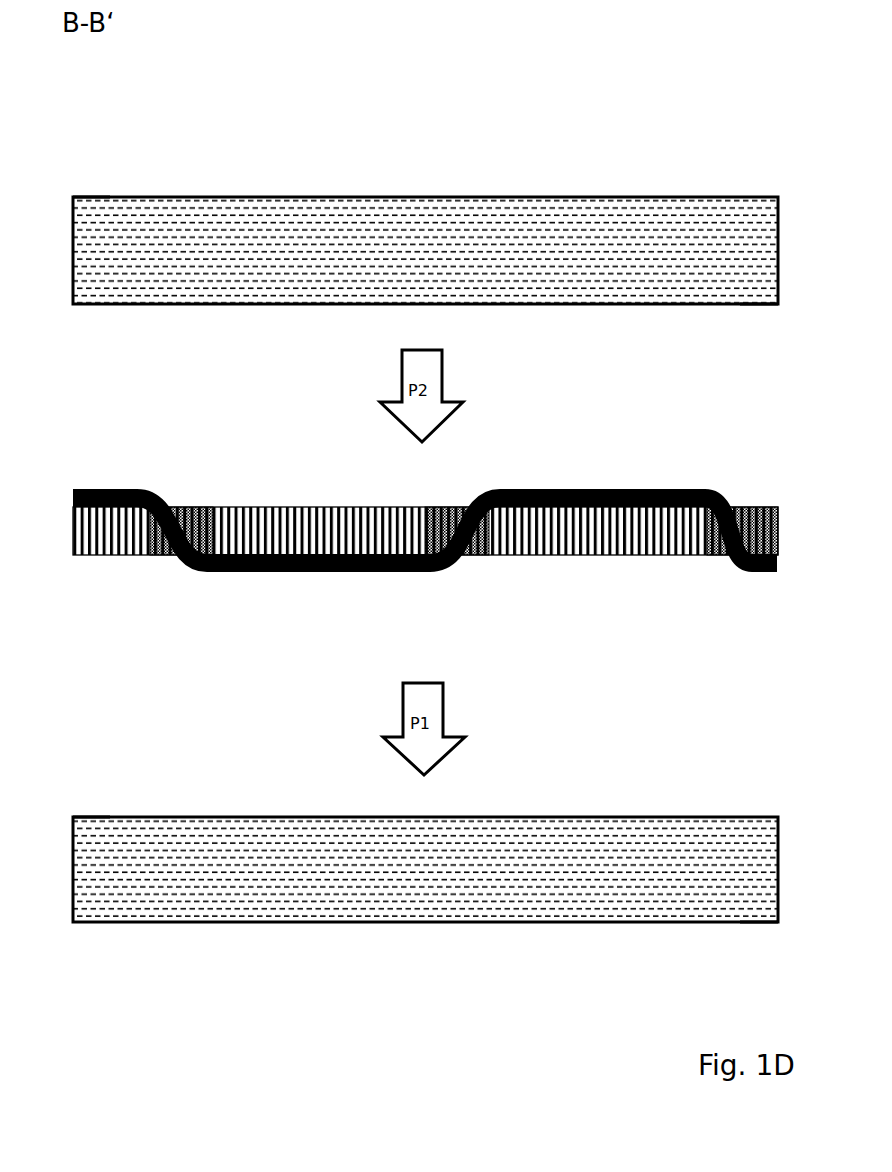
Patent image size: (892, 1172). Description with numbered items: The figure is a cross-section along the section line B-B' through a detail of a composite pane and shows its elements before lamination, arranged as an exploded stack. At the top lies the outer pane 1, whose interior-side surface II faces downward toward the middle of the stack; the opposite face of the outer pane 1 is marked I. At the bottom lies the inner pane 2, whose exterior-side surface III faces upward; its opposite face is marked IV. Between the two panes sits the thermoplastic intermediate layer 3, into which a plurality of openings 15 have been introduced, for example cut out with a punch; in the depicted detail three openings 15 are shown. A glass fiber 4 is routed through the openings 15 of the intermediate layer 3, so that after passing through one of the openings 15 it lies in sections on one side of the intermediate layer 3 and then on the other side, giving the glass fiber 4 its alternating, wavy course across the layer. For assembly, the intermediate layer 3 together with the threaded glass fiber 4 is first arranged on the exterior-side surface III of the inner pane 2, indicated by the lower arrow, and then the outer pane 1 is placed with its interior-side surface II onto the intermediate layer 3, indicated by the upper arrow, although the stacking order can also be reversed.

The outer pane 1 is at (221, 244).
The inner pane 2 is at (290, 870).
The thermoplastic intermediate layer 3 is at (300, 526).
The glass fiber 4 is at (530, 496).
The openings 15 is at (162, 553).
The first side of first layer I is at (92, 197).
The interior-side surface II is at (758, 306).
The exterior-side surface III is at (85, 806).
The second side of second layer IV is at (753, 925).